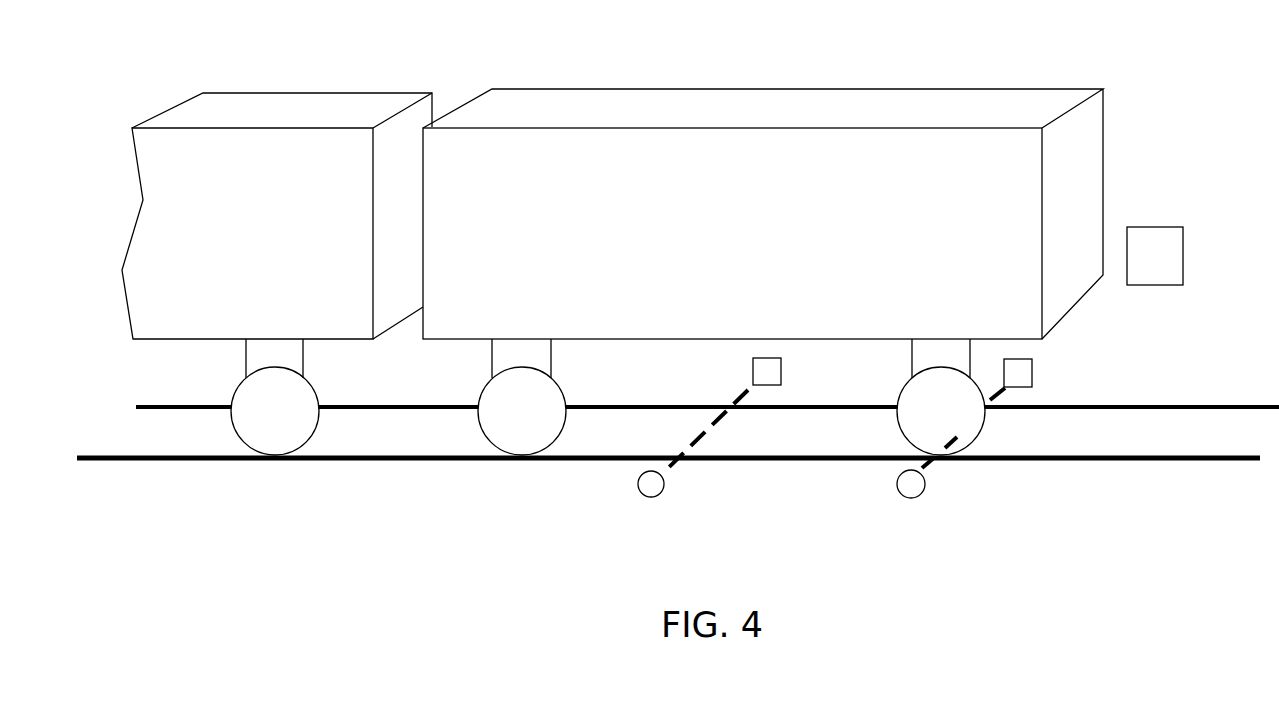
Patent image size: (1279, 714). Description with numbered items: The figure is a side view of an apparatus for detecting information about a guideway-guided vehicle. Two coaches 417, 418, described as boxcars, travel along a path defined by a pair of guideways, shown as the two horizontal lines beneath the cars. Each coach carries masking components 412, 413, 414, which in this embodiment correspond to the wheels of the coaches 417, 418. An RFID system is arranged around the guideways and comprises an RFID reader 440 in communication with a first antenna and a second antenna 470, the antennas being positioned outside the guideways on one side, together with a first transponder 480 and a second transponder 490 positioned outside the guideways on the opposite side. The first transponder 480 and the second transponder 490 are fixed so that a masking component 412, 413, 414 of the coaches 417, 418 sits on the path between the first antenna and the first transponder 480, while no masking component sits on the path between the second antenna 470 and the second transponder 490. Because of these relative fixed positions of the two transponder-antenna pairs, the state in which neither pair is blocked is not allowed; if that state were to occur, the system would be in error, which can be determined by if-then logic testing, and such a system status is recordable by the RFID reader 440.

The masking component 412 is at (965, 424).
The masking component 413 is at (546, 424).
The masking component 414 is at (299, 424).
The coach 417 is at (1103, 89).
The coach 418 is at (432, 93).
The RFID reader 440 is at (1176, 270).
The second antenna 470 is at (781, 367).
The first transponder 480 is at (925, 486).
The second transponder 490 is at (664, 486).